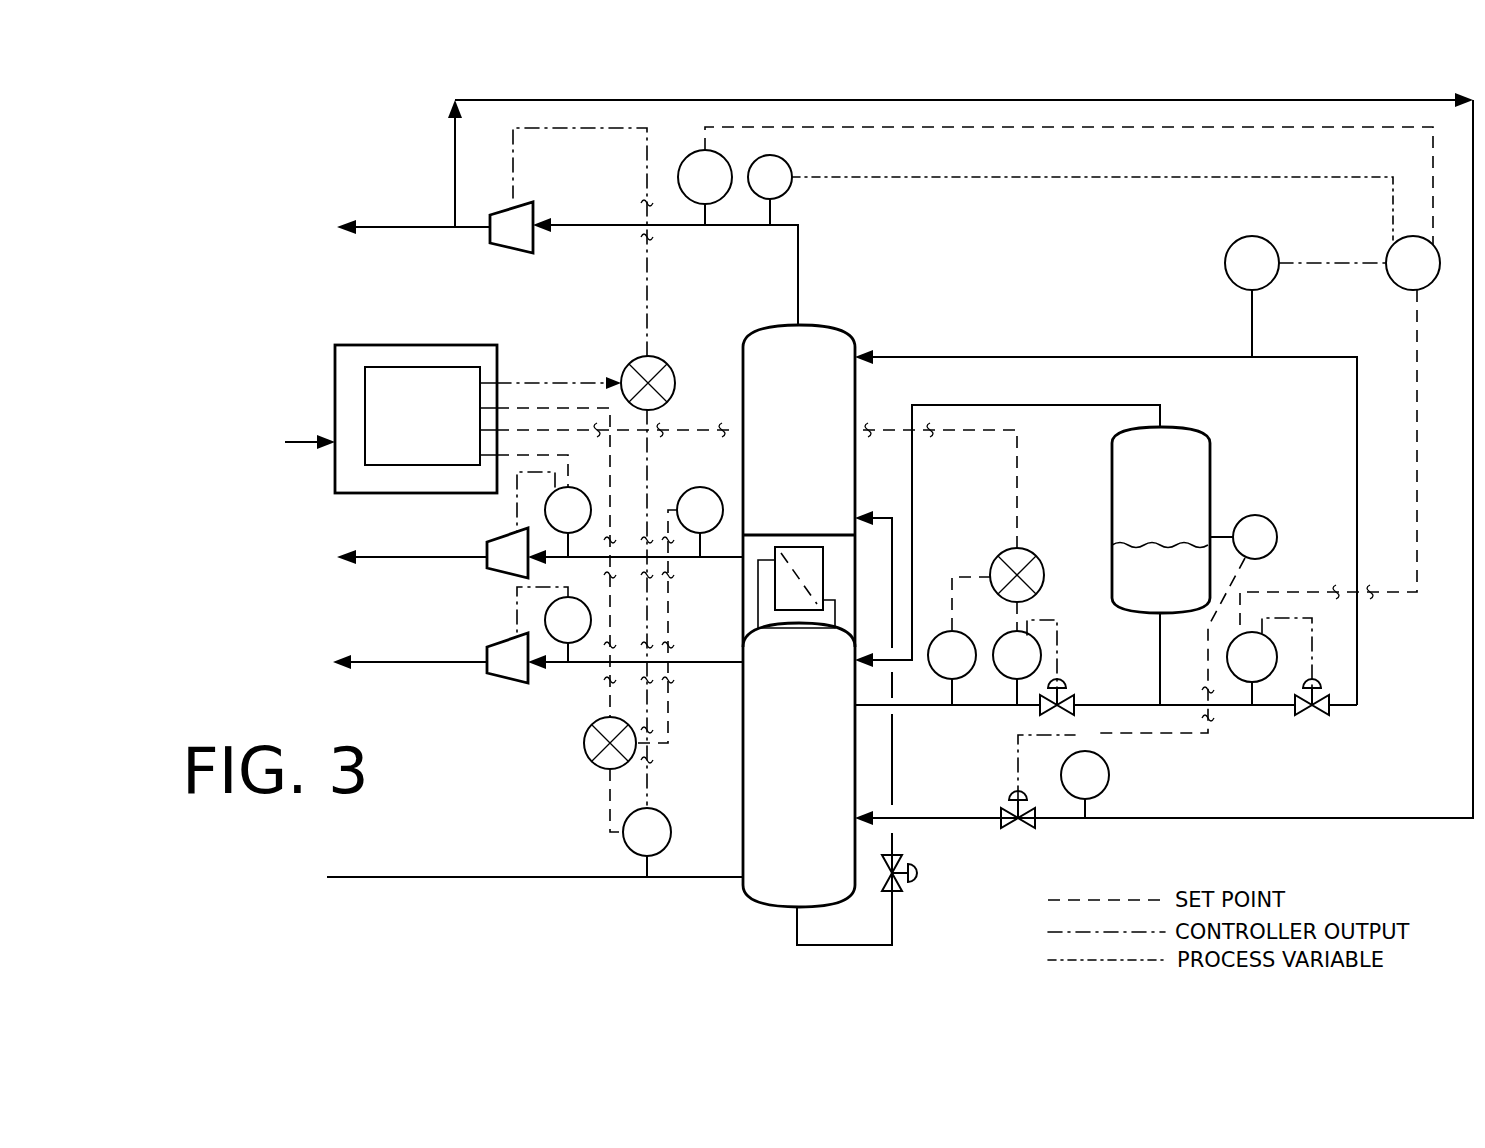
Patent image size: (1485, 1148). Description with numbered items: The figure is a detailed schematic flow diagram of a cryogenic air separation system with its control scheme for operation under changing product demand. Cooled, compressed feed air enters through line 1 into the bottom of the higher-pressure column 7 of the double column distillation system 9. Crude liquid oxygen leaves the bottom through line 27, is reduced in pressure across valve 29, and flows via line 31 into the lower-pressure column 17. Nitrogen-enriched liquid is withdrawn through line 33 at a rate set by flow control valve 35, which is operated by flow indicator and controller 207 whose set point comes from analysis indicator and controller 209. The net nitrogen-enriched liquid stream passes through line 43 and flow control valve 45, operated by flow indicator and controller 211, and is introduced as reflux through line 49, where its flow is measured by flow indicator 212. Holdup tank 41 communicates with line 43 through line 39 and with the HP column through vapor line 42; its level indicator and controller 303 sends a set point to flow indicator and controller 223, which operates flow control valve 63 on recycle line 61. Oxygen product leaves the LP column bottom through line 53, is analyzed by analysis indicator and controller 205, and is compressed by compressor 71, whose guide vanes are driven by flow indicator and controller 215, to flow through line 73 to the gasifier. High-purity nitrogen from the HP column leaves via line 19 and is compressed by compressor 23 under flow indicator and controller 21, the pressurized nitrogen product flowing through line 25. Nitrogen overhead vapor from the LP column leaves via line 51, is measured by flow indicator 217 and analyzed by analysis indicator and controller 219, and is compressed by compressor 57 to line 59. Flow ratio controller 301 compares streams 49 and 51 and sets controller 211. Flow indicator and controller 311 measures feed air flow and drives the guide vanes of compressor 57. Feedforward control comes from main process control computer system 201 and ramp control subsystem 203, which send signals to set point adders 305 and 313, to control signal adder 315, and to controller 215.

The feed air line 1 is at (460, 876).
The higher-pressure distillation column 7 is at (748, 902).
The double column distillation system 9 is at (809, 588).
The lower-pressure distillation column 17 is at (858, 342).
The high-purity nitrogen line 19 is at (711, 672).
The flow indicator and controller 21 is at (584, 646).
The compressor 23 is at (487, 648).
The HPN2 product line 25 is at (380, 660).
The crude liquid oxygen line 27 is at (894, 920).
The valve 29 is at (930, 872).
The crude liquid oxygen feed line 31 is at (890, 510).
The nitrogen-enriched liquid line 33 is at (920, 712).
The flow control valve 35 is at (1045, 714).
The holdup tank line 39 is at (1160, 647).
The holdup tank 41 is at (1110, 480).
The vapor line 42 is at (1030, 405).
The net nitrogen-enriched liquid line 43 is at (1238, 712).
The flow control valve 45 is at (1318, 713).
The reflux line 49 is at (1355, 411).
The nitrogen overhead vapor line 51 is at (722, 229).
The oxygen product line 53 is at (718, 573).
The compressor 57 is at (513, 250).
The pressurized nitrogen product line 59 is at (410, 227).
The recycle nitrogen line 61 is at (455, 160).
The flow control valve 63 is at (1005, 790).
The compressor 71 is at (487, 545).
The pressurized oxygen product line 73 is at (380, 556).
The main process control computer system 201 is at (334, 357).
The ramp control subsystem 203 is at (470, 368).
The analysis indicator and controller 205 is at (696, 488).
The flow indicator and controller 207 is at (998, 640).
The analysis indicator and controller 209 is at (930, 643).
The flow indicator and controller 211 is at (1227, 657).
The flow indicator 212 is at (1226, 268).
The flow indicator and controller 215 is at (516, 512).
The flow indicator 217 is at (784, 195).
The analysis indicator and controller 219 is at (685, 155).
The flow indicator and controller 223 is at (1110, 774).
The flow ratio controller 301 is at (1392, 284).
The level indicator and controller 303 is at (1262, 515).
The set point adder 305 is at (1000, 548).
The flow indicator and controller 311 is at (667, 808).
The set point adder 313 is at (590, 760).
The control signal adder 315 is at (662, 366).